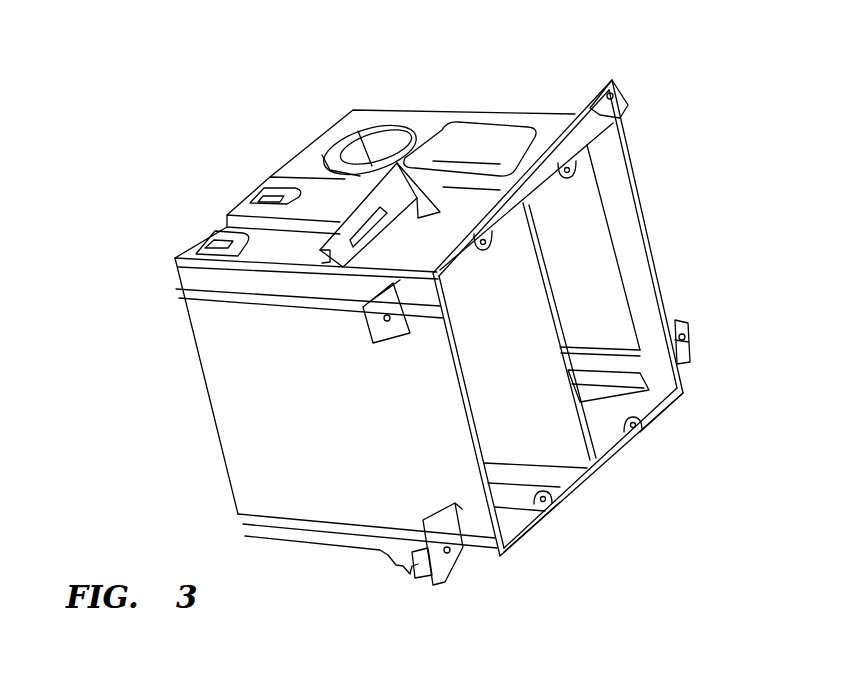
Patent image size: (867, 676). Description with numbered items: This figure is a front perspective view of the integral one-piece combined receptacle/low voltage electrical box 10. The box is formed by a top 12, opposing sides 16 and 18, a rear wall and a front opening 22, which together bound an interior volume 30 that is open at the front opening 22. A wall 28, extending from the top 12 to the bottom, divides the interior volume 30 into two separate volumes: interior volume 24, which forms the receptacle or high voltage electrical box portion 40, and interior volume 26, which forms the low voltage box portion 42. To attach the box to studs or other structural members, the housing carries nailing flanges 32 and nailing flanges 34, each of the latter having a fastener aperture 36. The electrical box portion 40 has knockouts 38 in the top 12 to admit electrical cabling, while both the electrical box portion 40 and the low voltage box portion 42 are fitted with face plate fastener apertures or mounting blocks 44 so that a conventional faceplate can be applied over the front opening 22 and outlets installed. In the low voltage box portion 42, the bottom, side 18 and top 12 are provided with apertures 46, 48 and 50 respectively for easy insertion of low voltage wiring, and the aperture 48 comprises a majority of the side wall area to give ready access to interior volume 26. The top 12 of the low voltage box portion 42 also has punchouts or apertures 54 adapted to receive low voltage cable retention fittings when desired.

The integral one-piece combined receptacle/low voltage electrical box 10 is at (684, 549).
The top 12 is at (392, 261).
The side 16 is at (294, 444).
The side 18 is at (636, 290).
The front opening 22 is at (606, 464).
The interior volume 24 is at (483, 410).
The interior volume 26 is at (620, 360).
The wall 28 is at (496, 368).
The interior volume 30 is at (514, 240).
The nailing flanges 32 is at (385, 189).
The nailing flanges 34 is at (604, 88).
The fastener aperture 36 is at (627, 107).
The knockouts 38 is at (253, 200).
The electrical box portion 40 is at (559, 522).
The low voltage box portion 42 is at (664, 428).
The face plate fastener apertures or mounting blocks 44 is at (575, 172).
The aperture 46 is at (650, 392).
The aperture 48 is at (606, 262).
The aperture 50 is at (471, 138).
The punchouts or apertures 54 is at (357, 156).